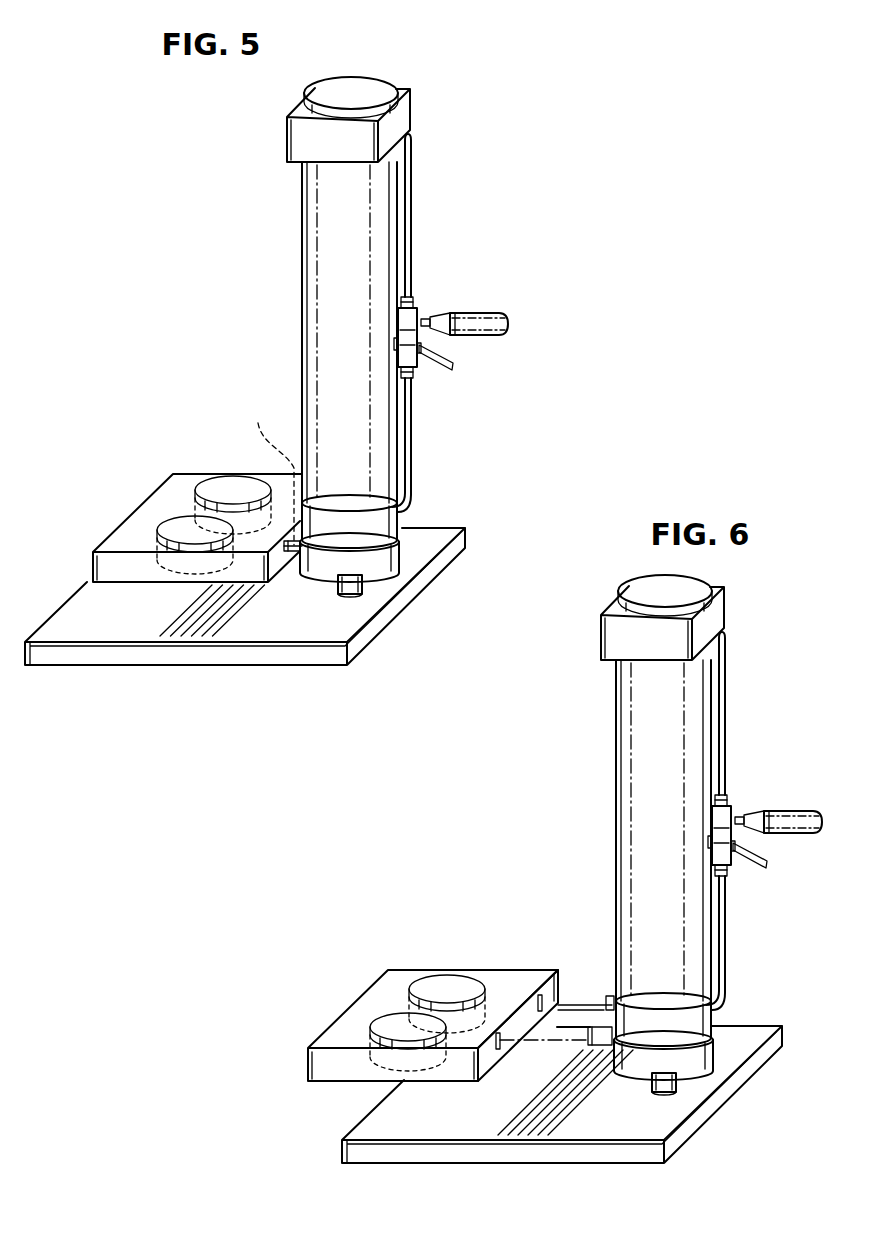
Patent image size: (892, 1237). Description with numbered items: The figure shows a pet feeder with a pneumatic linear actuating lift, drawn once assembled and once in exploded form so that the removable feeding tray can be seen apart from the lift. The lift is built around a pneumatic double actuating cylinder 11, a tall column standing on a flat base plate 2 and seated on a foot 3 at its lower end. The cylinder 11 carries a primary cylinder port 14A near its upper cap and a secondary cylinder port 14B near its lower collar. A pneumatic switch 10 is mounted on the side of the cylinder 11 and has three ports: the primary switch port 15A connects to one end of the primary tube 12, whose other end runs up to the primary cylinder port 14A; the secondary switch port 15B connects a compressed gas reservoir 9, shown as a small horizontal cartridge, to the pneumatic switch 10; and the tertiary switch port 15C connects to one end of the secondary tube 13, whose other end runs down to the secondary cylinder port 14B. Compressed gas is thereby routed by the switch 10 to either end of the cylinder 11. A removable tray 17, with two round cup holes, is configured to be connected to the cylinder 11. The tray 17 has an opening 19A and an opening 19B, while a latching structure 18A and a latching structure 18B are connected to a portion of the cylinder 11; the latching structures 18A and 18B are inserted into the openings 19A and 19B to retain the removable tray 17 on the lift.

In FIG. 5, the base plate 2 is at (186, 667).
In FIG. 6, the base plate 2 is at (537, 1165).
In FIG. 5, the mounting peg 3 is at (362, 584).
In FIG. 6, the mounting peg 3 is at (677, 1082).
In FIG. 5, the compressed gas reservoir 9 is at (480, 320).
In FIG. 6, the compressed gas reservoir 9 is at (795, 818).
In FIG. 5, the pneumatic switch 10 is at (455, 370).
In FIG. 6, the pneumatic switch 10 is at (770, 868).
In FIG. 5, the pneumatic double actuating cylinder 11 is at (312, 295).
In FIG. 6, the pneumatic double actuating cylinder 11 is at (626, 795).
In FIG. 5, the primary tube 12 is at (408, 217).
In FIG. 6, the primary tube 12 is at (722, 717).
In FIG. 5, the secondary tube 13 is at (410, 462).
In FIG. 6, the secondary tube 13 is at (725, 962).
In FIG. 5, the primary cylinder port 14A is at (404, 140).
In FIG. 6, the primary cylinder port 14A is at (718, 638).
In FIG. 5, the secondary cylinder port 14B is at (404, 514).
In FIG. 6, the secondary cylinder port 14B is at (717, 1013).
In FIG. 5, the primary switch port 15A is at (410, 305).
In FIG. 6, the primary switch port 15A is at (724, 804).
In FIG. 5, the secondary switch port 15B is at (418, 373).
In FIG. 6, the secondary switch port 15B is at (733, 871).
In FIG. 5, the tertiary switch port 15C is at (419, 374).
In FIG. 6, the tertiary switch port 15C is at (734, 872).
In FIG. 5, the removable tray 17 is at (112, 528).
In FIG. 6, the removable tray 17 is at (327, 1025).
In FIG. 5, the latching structure 18A is at (268, 472).
In FIG. 6, the latching structure 18A is at (614, 1003).
In FIG. 5, the latching structure 18B is at (264, 506).
In FIG. 6, the latching structure 18B is at (597, 1027).
In FIG. 6, the opening 19A is at (530, 968).
In FIG. 6, the opening 19B is at (494, 1034).